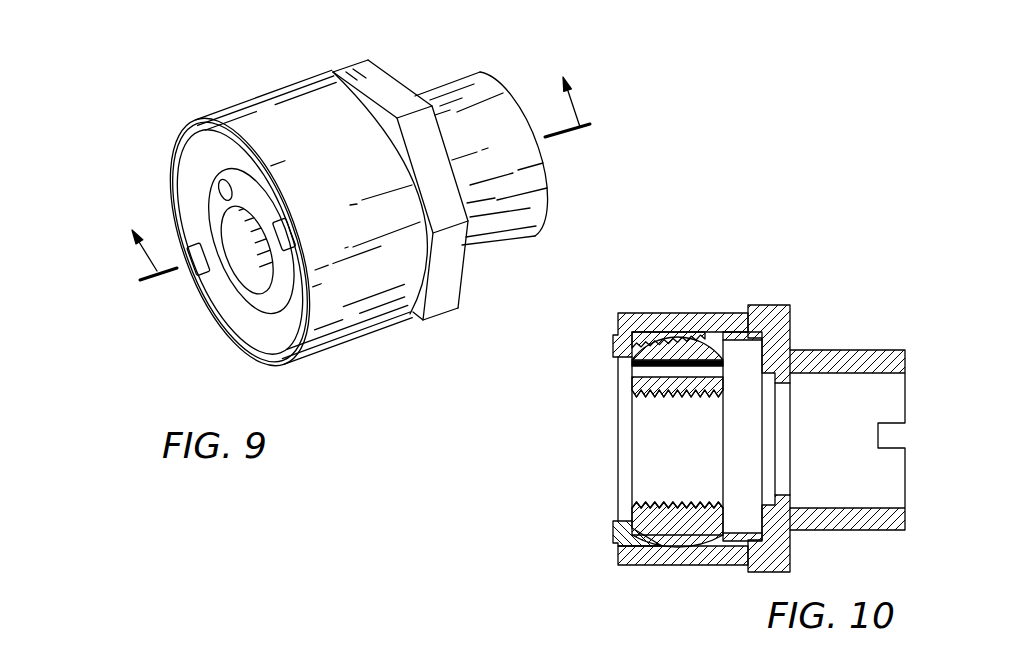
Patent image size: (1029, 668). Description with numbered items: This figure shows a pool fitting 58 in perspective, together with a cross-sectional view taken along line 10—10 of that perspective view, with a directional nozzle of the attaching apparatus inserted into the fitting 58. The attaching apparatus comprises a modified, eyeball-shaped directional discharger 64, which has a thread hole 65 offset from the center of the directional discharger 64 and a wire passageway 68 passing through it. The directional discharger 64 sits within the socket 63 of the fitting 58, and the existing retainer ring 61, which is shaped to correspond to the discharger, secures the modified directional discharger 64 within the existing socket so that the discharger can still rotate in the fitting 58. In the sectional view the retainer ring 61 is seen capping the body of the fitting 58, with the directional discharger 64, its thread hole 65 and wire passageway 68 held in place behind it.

In FIG. 9, the fitting 58 is at (497, 243).
In FIG. 10, the fitting 58 is at (906, 395).
In FIG. 9, the retainer ring 61 is at (218, 152).
In FIG. 10, the retainer ring 61 is at (614, 346).
In FIG. 10, the socket 63 is at (734, 352).
In FIG. 9, the directional discharger 64 is at (248, 314).
In FIG. 10, the directional discharger 64 is at (632, 518).
In FIG. 9, the thread hole 65 is at (244, 278).
In FIG. 10, the thread hole 65 is at (637, 391).
In FIG. 9, the wire passageway 68 is at (224, 181).
In FIG. 10, the wire passageway 68 is at (630, 372).
In FIG. 9, the section line 10- 10 is at (351, 159).